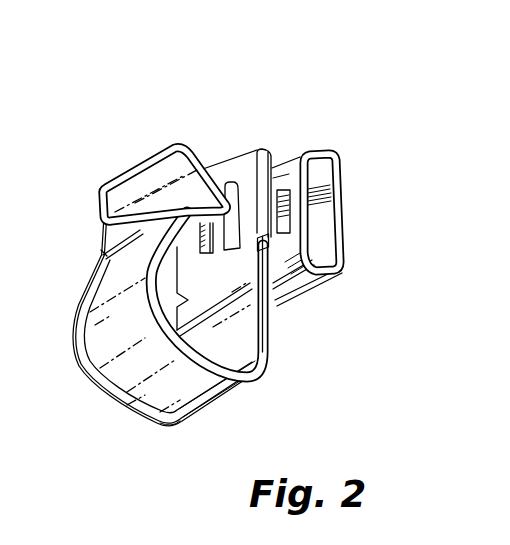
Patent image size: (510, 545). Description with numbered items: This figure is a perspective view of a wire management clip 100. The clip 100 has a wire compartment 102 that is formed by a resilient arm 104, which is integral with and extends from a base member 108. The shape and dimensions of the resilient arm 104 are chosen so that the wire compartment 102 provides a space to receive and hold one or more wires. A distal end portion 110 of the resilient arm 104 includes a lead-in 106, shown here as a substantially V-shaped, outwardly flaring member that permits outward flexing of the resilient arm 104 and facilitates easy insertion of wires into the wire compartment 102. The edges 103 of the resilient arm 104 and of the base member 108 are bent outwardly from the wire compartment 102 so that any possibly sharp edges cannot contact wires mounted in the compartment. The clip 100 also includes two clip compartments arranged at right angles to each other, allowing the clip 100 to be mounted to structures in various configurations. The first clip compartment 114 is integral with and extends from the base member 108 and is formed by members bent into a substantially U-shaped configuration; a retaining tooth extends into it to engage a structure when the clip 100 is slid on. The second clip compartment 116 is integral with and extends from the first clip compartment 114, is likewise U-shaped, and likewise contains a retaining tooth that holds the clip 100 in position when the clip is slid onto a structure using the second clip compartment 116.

The clip 100 is at (191, 102).
The wire compartment 102 is at (232, 328).
The edges 103 is at (264, 380).
The resilient arm 104 is at (108, 291).
The lead-in 106 is at (134, 183).
The base member 108 is at (232, 348).
The distal end portion 110 is at (102, 252).
The first clip compartment 114 is at (279, 180).
The second clip compartment 116 is at (318, 237).